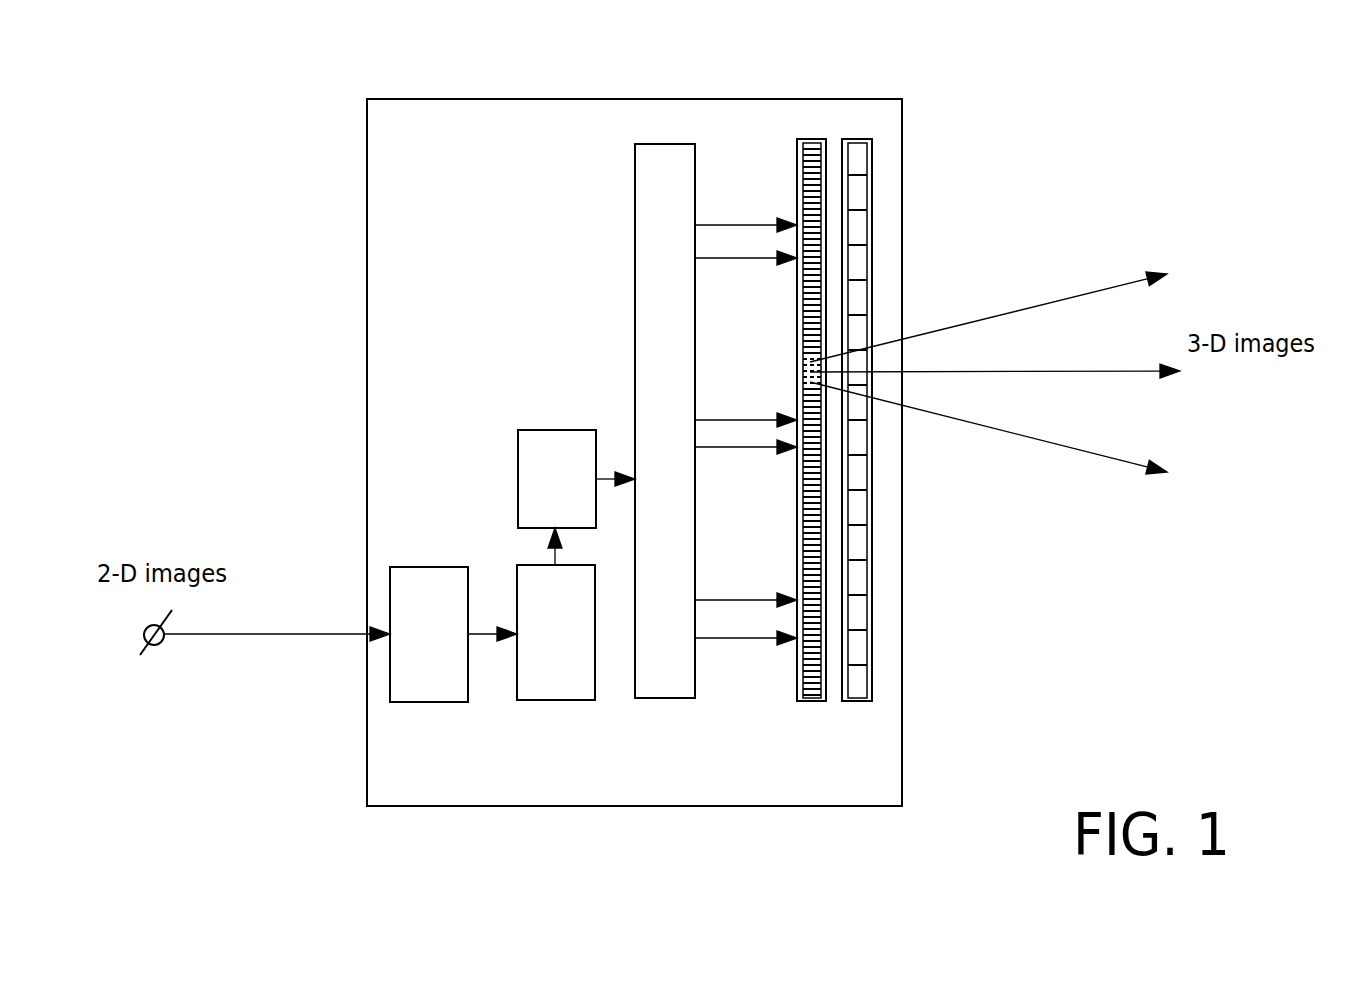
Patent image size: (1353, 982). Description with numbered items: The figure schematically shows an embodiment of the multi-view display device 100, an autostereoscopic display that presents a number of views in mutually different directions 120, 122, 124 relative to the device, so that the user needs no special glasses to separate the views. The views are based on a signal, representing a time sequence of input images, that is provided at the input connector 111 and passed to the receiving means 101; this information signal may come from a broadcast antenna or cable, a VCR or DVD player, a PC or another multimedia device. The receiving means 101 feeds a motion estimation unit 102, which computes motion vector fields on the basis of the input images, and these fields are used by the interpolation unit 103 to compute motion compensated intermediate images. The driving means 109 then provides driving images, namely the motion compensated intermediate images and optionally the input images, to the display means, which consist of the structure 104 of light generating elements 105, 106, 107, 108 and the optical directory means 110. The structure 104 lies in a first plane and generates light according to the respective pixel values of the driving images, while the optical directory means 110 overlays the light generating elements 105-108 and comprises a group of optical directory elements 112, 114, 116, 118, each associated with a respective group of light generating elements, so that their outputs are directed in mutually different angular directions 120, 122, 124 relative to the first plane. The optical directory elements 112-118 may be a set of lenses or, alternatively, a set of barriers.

The multi-view display device 100 is at (513, 68).
The receiving means 101 is at (449, 644).
The motion estimation unit 102 is at (575, 644).
The interpolation unit 103 is at (577, 490).
The structure of light generating elements 104 is at (772, 376).
The light generating element 105 is at (808, 360).
The light generating element 106 is at (801, 154).
The light generating element 107 is at (808, 372).
The light generating element 108 is at (808, 384).
The driving means 109 is at (683, 600).
The optical directory means 110 is at (851, 139).
The input connector 111 is at (157, 647).
The optical directory element 112 is at (864, 153).
The optical directory element 114 is at (864, 191).
The optical directory element 116 is at (864, 228).
The optical directory element 118 is at (864, 263).
The direction 120 is at (1095, 291).
The direction 122 is at (1115, 372).
The direction 124 is at (1050, 443).